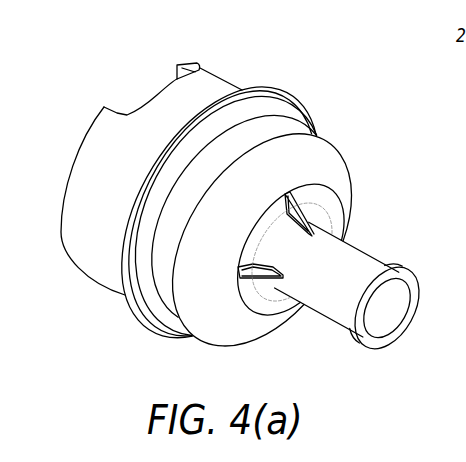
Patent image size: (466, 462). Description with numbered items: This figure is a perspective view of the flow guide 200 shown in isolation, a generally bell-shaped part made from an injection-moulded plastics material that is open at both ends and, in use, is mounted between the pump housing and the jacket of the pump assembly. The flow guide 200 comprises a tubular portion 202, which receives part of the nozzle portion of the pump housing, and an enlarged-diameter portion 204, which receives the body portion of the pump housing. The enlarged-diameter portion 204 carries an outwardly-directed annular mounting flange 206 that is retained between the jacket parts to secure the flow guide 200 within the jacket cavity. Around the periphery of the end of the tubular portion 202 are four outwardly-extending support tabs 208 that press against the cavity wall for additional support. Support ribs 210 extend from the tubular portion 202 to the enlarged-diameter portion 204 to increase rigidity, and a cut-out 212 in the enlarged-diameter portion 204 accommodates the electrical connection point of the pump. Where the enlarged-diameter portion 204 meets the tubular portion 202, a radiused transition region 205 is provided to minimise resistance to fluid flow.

The flow guide 200 is at (107, 65).
The tubular portion 202 is at (329, 307).
The enlarged-diameter portion 204 is at (82, 252).
The radiused transition region 205 is at (240, 338).
The mounting flange 206 is at (167, 338).
The support tabs 208 is at (386, 341).
The support ribs 210 is at (333, 197).
The cut-out 212 is at (165, 82).